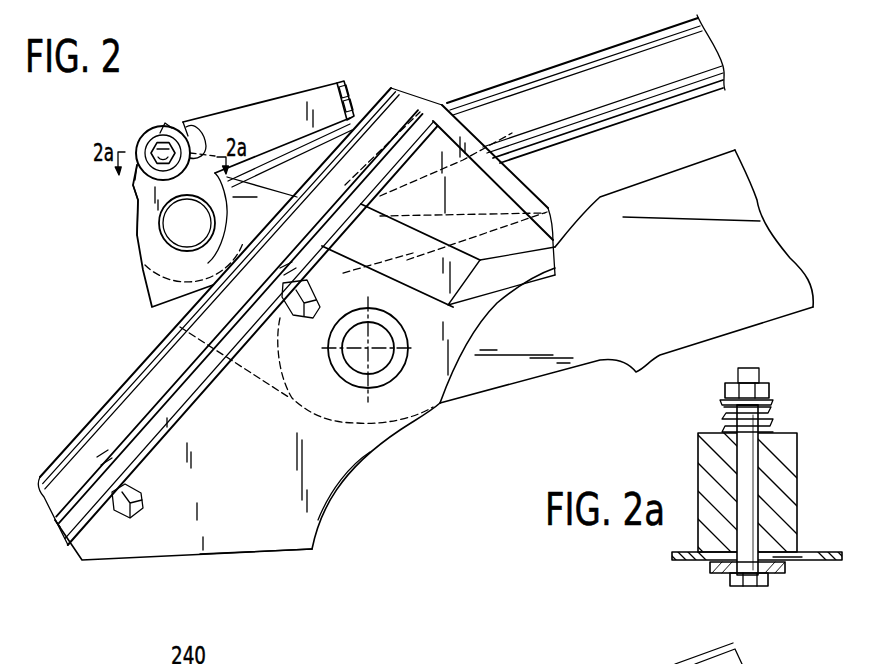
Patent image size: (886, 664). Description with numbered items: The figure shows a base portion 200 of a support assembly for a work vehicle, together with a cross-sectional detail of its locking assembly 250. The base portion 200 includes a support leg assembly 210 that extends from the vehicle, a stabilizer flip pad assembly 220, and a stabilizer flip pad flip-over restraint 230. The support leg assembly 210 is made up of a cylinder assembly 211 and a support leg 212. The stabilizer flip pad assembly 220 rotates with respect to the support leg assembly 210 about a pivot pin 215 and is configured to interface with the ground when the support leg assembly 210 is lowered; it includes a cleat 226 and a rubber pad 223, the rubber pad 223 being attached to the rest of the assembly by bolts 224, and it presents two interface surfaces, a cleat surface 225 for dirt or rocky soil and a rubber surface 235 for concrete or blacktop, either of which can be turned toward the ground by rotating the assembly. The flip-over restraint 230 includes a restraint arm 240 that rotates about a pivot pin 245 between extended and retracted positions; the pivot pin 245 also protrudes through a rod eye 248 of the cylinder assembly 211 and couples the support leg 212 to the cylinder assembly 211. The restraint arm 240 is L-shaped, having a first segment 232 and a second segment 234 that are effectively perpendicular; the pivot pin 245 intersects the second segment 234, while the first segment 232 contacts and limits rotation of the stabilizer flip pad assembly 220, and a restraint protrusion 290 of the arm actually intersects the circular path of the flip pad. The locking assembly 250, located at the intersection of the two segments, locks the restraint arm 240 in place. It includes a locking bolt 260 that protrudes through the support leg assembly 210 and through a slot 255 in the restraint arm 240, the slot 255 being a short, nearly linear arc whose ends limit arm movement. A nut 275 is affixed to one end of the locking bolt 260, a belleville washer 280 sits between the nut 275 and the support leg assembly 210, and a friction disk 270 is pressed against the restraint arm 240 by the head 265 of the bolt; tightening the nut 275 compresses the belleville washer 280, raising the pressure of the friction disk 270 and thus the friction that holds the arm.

In FIG. 2, the base portion 200 is at (79, 230).
In FIG. 2, the support leg assembly 210 is at (556, 373).
In FIG. 2A, the support leg assembly 210 is at (797, 458).
In FIG. 2, the cylinder assembly 211 is at (558, 66).
In FIG. 2, the support leg 212 is at (782, 313).
In FIG. 2, the pivot pin 215 is at (403, 378).
In FIG. 2, the stabilizer flip pad assembly 220 is at (325, 511).
In FIG. 2, the rubber pad 223 is at (56, 498).
In FIG. 2, the bolts 224 is at (317, 322).
In FIG. 2, the cleat surface 225 is at (337, 484).
In FIG. 2, the cleat 226 is at (270, 552).
In FIG. 2, the stabilizer flip pad flip-over restraint 230 is at (205, 105).
In FIG. 2, the first segment 232 is at (246, 118).
In FIG. 2, the second segment 234 is at (158, 196).
In FIG. 2, the rubber surface 235 is at (96, 412).
In FIG. 2, the restraint arm 240 is at (273, 98).
In FIG. 2A, the restraint arm 240 is at (823, 552).
In FIG. 2, the pivot pin 245 is at (163, 222).
In FIG. 2, the rod eye 248 is at (167, 262).
In FIG. 2, the locking assembly 250 is at (133, 132).
In FIG. 2A, the locking assembly 250 is at (626, 541).
In FIG. 2, the slot 255 is at (194, 130).
In FIG. 2A, the slot 255 is at (775, 560).
In FIG. 2A, the locking bolt 260 is at (760, 447).
In FIG. 2A, the head 265 is at (748, 587).
In FIG. 2A, the friction disk 270 is at (713, 563).
In FIG. 2A, the nut 275 is at (727, 390).
In FIG. 2A, the belleville washer 280 is at (720, 411).
In FIG. 2, the restraint protrusion 290 is at (353, 106).